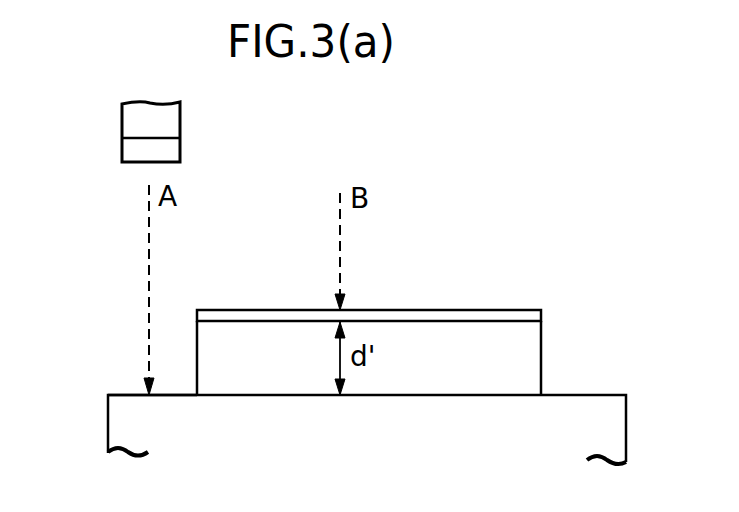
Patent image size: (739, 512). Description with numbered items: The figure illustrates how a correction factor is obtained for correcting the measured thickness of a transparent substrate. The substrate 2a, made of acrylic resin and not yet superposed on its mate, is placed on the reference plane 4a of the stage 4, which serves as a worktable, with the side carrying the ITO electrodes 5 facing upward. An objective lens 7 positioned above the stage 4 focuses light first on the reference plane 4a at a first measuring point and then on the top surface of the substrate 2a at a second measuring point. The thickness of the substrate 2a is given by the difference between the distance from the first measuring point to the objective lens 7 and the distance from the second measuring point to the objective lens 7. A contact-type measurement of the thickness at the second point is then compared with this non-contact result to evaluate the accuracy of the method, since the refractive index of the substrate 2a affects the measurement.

The objective lens 7 is at (172, 123).
The ITO electrode 5 is at (533, 317).
The transparent substrate 2a is at (528, 360).
The stage 4 is at (613, 425).
The reference plane 4a is at (122, 393).